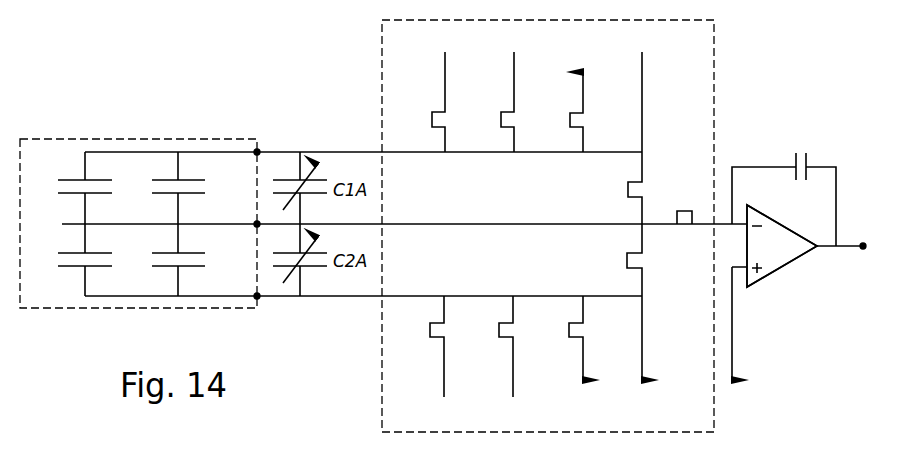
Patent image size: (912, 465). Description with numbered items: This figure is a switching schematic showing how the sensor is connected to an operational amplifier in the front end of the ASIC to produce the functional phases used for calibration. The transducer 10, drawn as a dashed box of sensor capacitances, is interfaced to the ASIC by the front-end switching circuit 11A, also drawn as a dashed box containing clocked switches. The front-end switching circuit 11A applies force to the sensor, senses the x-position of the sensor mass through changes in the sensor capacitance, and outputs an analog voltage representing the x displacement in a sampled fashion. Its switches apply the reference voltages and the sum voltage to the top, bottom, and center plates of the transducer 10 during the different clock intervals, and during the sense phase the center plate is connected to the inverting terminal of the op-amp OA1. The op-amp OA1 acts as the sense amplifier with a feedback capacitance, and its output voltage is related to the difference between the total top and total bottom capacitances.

The transducer 10 is at (205, 147).
The front-end switching circuit 11A is at (705, 53).
The op-amp OA1 is at (777, 265).